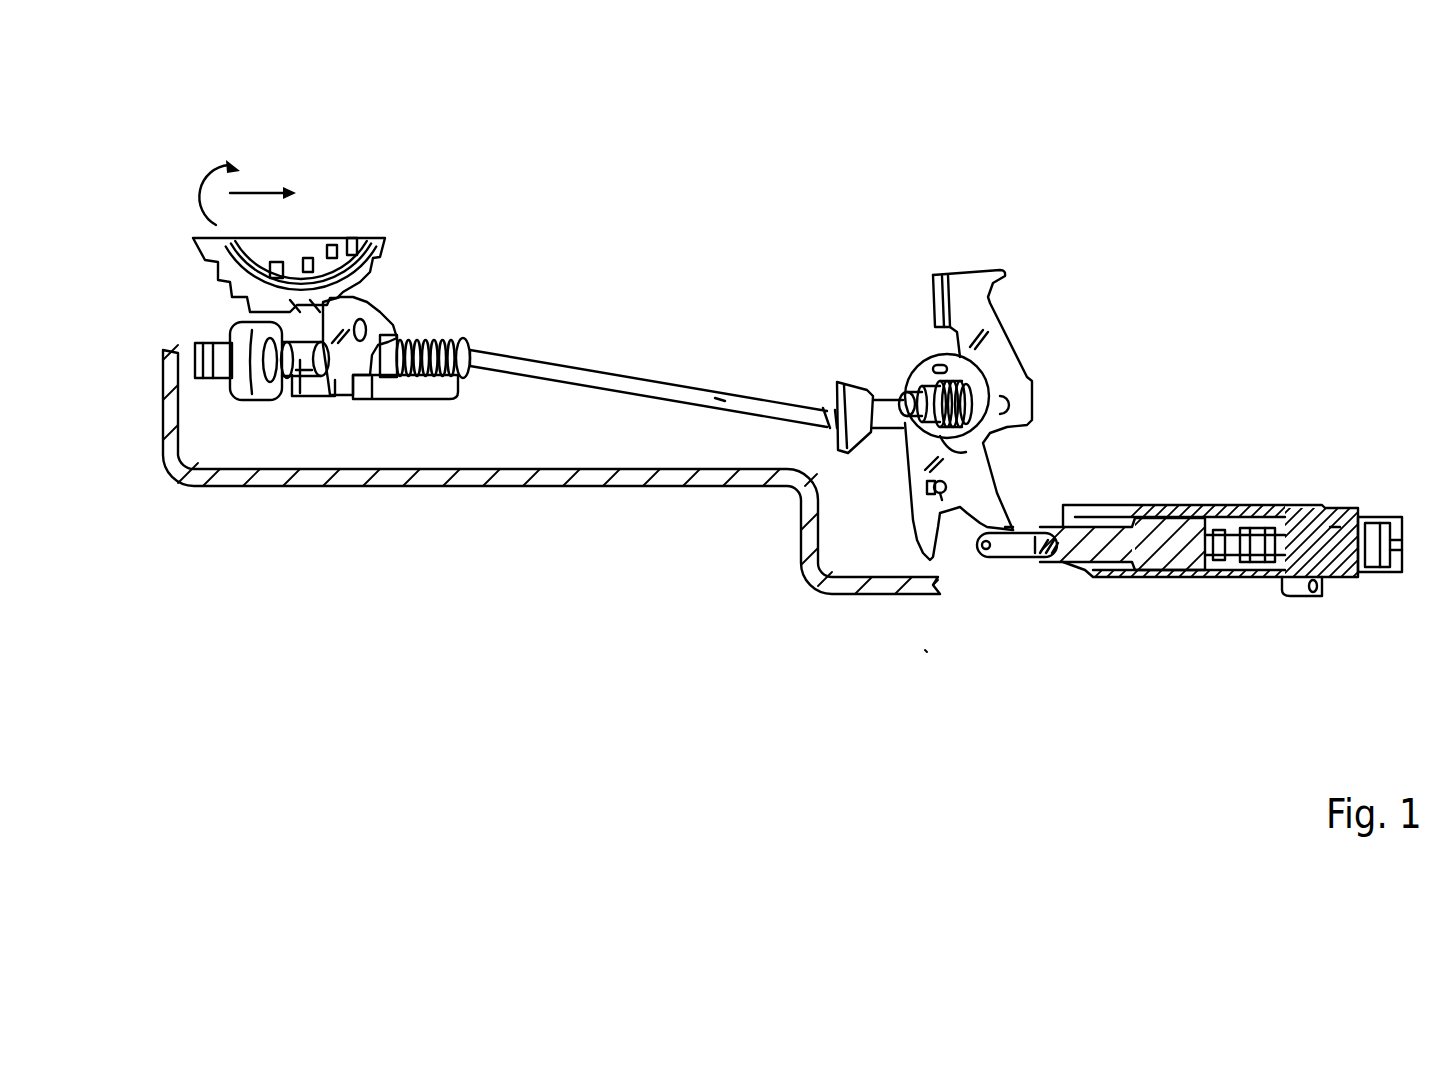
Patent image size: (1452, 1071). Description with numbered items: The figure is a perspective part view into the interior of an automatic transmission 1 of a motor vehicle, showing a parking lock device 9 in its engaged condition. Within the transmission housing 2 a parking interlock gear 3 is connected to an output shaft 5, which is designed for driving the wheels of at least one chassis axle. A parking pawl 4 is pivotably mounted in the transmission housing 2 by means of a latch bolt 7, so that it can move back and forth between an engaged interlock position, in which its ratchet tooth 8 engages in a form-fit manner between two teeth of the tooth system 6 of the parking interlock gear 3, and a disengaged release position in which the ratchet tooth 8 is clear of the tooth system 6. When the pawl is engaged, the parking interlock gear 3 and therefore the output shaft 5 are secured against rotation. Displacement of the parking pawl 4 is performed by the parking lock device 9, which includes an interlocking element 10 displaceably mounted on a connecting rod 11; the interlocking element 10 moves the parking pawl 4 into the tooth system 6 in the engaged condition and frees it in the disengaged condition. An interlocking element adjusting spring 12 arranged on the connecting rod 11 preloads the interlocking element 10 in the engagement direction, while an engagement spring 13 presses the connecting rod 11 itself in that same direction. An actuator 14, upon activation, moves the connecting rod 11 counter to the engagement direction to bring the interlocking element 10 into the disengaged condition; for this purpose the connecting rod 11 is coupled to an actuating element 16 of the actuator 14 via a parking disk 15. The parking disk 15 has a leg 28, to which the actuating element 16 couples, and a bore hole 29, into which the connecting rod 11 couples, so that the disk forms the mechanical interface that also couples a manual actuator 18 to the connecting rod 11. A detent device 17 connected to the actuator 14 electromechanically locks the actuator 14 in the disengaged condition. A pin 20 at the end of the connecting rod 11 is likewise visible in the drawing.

The transmission 1 is at (733, 228).
The transmission housing 2 is at (262, 478).
The parking interlock gear 3 is at (385, 240).
The parking pawl 4 is at (383, 323).
The output shaft 5 is at (258, 192).
The tooth system 6 is at (318, 258).
The latch bolt 7 is at (300, 363).
The ratchet tooth 8 is at (350, 302).
The parking lock device 9 is at (1018, 248).
The interlocking element 10 is at (368, 378).
The connecting rod 11 is at (660, 387).
The interlocking element adjusting spring 12 is at (443, 400).
The engagement spring 13 is at (960, 405).
The actuator 14 is at (1150, 553).
The parking disk 15 is at (975, 488).
The actuating element 16 is at (1000, 557).
The detent device 17 is at (1333, 527).
The manual actuator 18 is at (973, 303).
The pin 20 is at (905, 400).
The leg 28 is at (1008, 530).
The bore hole 29 is at (915, 508).